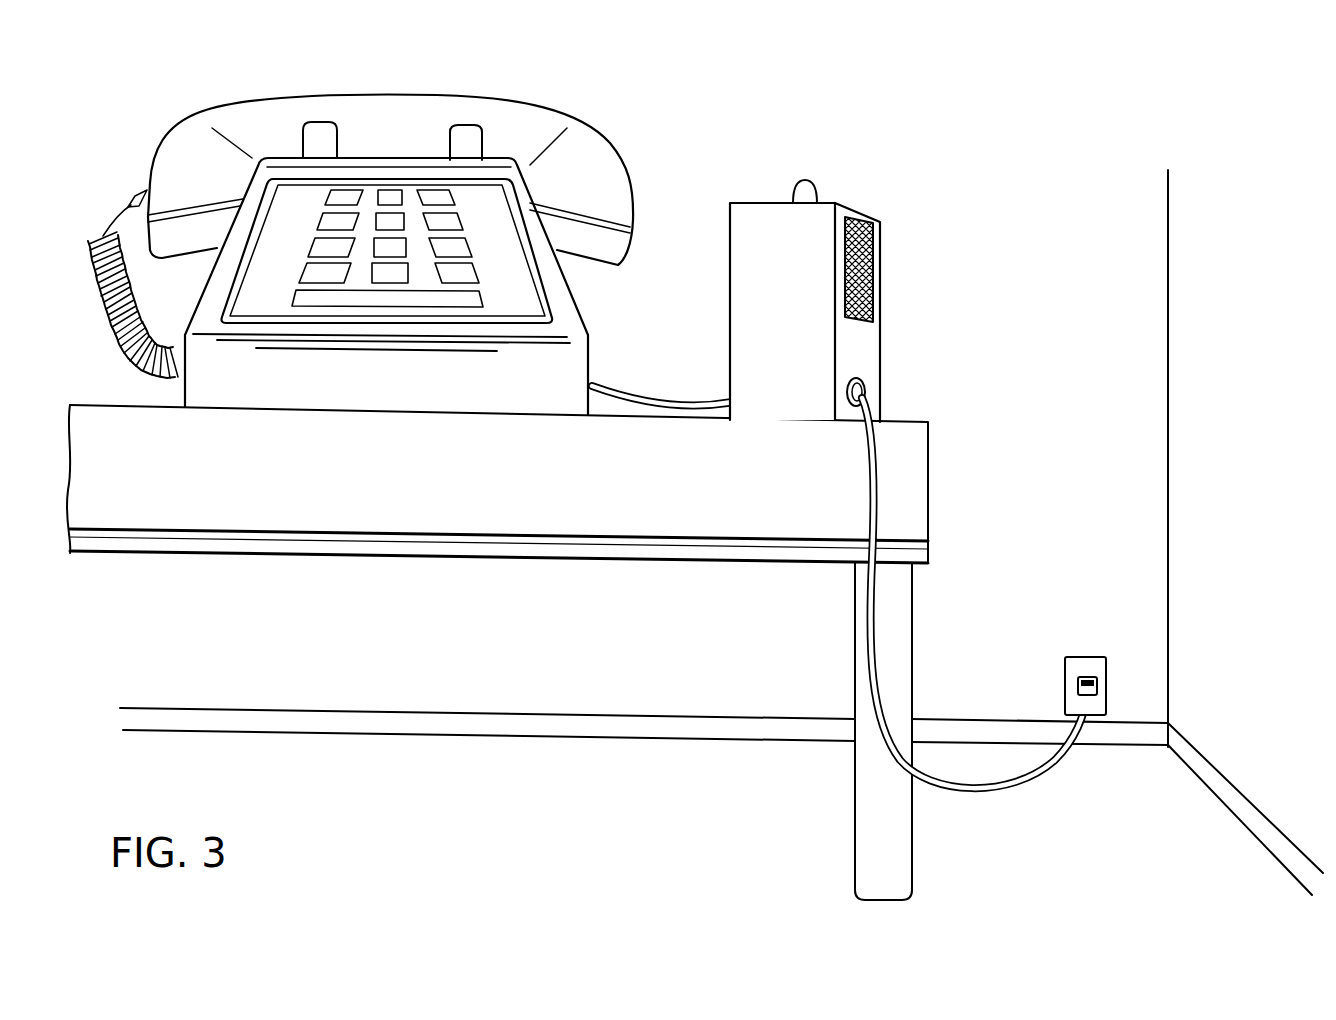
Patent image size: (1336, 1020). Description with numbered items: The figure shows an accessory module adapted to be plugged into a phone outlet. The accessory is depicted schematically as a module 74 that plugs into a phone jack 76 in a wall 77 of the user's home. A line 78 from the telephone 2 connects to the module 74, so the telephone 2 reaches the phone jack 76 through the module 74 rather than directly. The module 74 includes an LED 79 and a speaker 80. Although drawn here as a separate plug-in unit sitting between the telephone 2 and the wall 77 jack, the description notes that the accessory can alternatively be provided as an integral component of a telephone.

The telephone 2 is at (152, 96).
The module 74 is at (834, 276).
The phone jack 76 is at (1086, 668).
The wall 77 is at (1083, 503).
The line 78 is at (669, 387).
The LED 79 is at (812, 186).
The speaker 80 is at (884, 264).